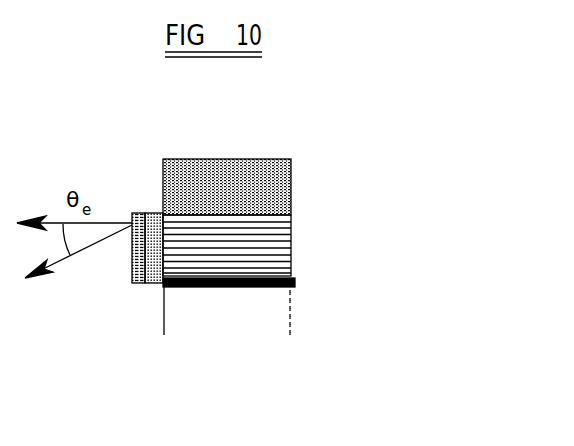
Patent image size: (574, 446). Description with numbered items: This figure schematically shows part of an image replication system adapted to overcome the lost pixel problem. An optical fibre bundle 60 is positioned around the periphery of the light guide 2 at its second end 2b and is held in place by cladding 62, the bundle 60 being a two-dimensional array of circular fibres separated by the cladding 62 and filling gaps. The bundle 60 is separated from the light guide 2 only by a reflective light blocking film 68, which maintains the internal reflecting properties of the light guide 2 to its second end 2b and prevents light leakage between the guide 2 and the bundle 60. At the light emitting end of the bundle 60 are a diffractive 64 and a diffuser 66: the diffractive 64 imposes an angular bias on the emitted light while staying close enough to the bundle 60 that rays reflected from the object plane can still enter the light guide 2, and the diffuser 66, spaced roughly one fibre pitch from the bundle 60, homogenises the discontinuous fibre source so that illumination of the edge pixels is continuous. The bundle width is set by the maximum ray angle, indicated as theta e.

The cladding 62 is at (228, 160).
The optical fibre bundle 60 is at (291, 228).
The reflective light blocking film 68 is at (295, 283).
The diffuser 66 is at (140, 284).
The diffractive 64 is at (153, 284).
The light guide 2 is at (220, 295).
The second end of the light guide 2b is at (157, 326).